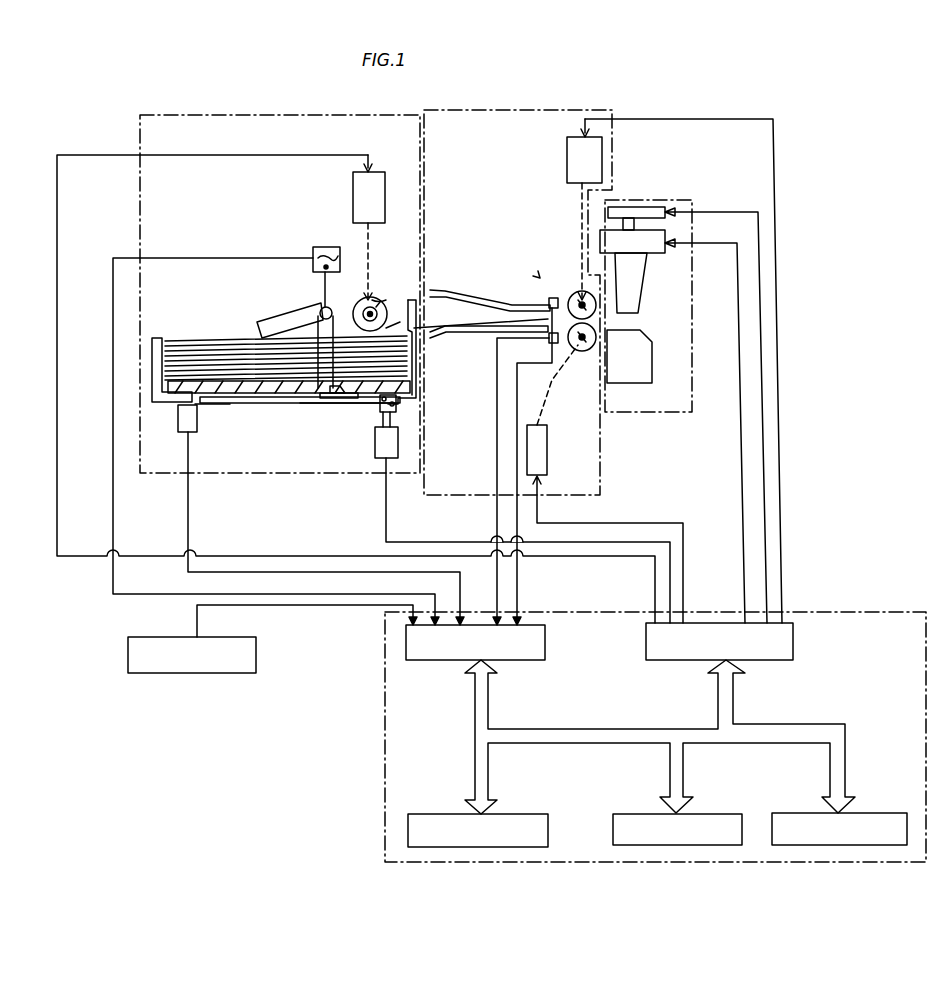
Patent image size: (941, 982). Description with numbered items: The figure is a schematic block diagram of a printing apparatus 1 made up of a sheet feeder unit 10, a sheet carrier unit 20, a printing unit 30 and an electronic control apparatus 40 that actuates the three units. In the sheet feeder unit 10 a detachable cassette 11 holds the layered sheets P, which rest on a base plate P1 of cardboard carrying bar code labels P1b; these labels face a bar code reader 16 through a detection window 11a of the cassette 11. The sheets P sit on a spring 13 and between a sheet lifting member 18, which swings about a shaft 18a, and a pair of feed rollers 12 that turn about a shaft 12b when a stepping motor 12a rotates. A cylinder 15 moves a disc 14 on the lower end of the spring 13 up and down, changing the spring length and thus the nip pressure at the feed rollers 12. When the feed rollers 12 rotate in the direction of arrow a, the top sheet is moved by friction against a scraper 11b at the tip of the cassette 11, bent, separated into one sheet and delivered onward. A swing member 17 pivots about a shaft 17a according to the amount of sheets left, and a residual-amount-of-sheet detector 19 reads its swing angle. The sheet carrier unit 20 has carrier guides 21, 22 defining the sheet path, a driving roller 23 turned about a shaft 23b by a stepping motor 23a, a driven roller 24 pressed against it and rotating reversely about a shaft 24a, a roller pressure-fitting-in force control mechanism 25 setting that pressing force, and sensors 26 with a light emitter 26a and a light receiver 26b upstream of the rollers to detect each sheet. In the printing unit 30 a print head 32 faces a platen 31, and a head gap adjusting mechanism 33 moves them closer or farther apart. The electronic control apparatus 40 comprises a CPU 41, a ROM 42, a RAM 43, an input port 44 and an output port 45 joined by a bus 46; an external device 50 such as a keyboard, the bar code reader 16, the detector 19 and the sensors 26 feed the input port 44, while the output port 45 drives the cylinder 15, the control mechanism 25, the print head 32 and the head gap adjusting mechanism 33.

The printing apparatus 1 is at (793, 168).
The sheet feeder unit 10 is at (368, 100).
The cassette 11 is at (153, 352).
The detection window 11a is at (205, 412).
The scraper 11b is at (446, 342).
The feed roller 12 is at (362, 305).
The stepping motor 12a is at (368, 172).
The shaft 12b is at (382, 322).
The arrow a is at (400, 310).
The spring 13 is at (350, 400).
The disc 14 is at (396, 450).
The cylinder 15 is at (378, 450).
The bar code reader 16 is at (180, 425).
The swing member 17 is at (278, 324).
The shaft 17a is at (320, 308).
The sheet lifting member 18 is at (338, 398).
The shaft 18a is at (315, 405).
The residual-amount-of-sheet detector 19 is at (328, 247).
The sheet carrier unit 20 is at (522, 104).
The carrier guide 21 is at (474, 290).
The carrier guide 22 is at (474, 338).
The driving roller 23 is at (580, 298).
The stepping motor 23a is at (567, 160).
The shaft 23b is at (573, 298).
The driven roller 24 is at (553, 372).
The shaft 24a is at (582, 345).
The roller pressure-fitting-in force control mechanism 25 is at (540, 462).
The sensor 26 is at (540, 278).
The light emitter 26a is at (548, 300).
The light receiver 26b is at (548, 344).
The printing unit 30 is at (614, 200).
The platen 31 is at (645, 362).
The print head 32 is at (636, 312).
The head gap adjusting mechanism 33 is at (656, 207).
The electronic control apparatus 40 is at (802, 612).
The CPU 41 is at (504, 814).
The ROM 42 is at (695, 814).
The RAM 43 is at (862, 814).
The input port 44 is at (520, 666).
The output port 45 is at (768, 664).
The bus 46 is at (790, 724).
The external device 50 is at (222, 640).
The sheets P is at (165, 338).
The base plate P1 is at (165, 388).
The bar code labels P1b is at (210, 396).